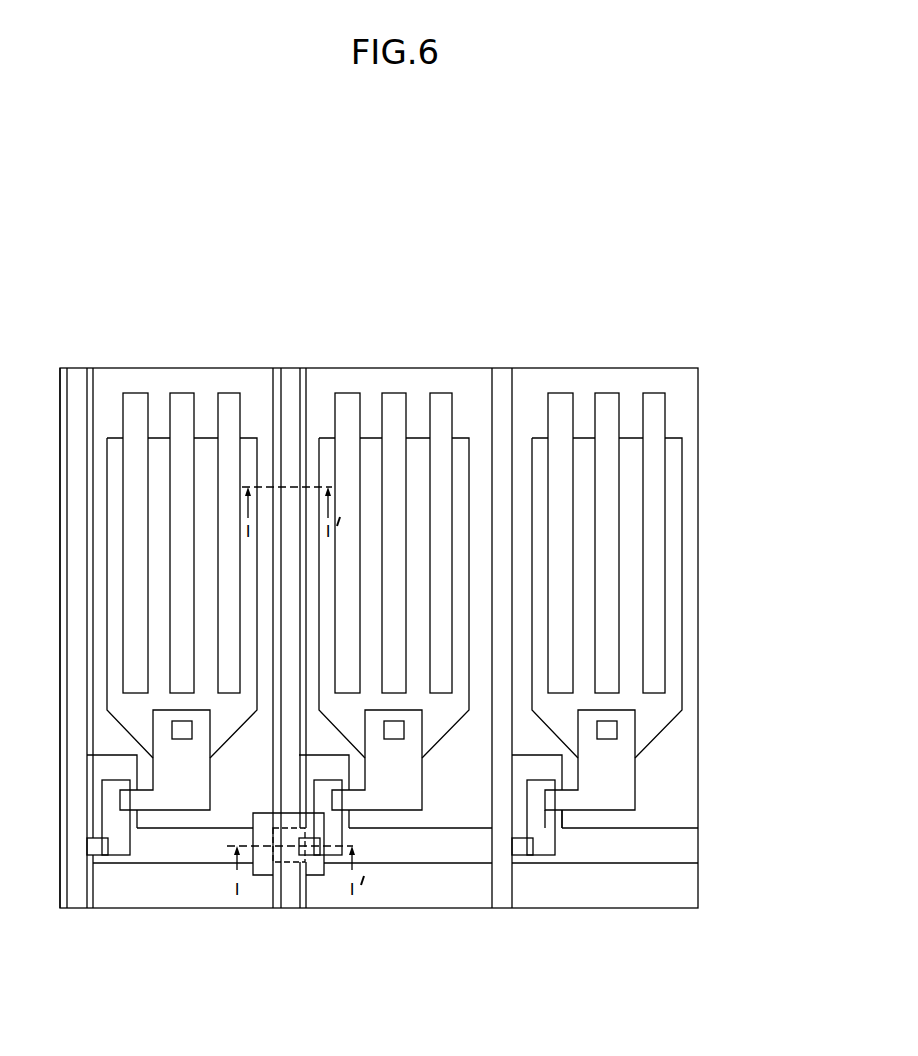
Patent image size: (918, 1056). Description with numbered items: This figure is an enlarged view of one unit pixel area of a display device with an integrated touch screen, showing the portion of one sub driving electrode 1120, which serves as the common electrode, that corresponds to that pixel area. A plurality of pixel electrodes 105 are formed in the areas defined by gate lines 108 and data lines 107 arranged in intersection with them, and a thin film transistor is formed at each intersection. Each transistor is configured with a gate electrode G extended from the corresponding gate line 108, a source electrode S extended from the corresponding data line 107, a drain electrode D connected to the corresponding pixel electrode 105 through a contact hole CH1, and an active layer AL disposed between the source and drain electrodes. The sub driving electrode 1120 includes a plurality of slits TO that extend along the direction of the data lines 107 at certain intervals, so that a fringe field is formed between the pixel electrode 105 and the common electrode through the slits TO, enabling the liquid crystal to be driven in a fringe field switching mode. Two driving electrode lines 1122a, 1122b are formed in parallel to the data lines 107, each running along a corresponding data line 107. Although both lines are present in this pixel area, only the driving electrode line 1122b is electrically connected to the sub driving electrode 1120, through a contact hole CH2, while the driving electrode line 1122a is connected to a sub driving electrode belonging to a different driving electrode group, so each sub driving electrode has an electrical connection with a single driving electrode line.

The sub driving electrode 1120 is at (688, 401).
The data line 107 is at (78, 367).
The driving electrode line 1122a is at (96, 384).
The driving electrode line 1122b is at (310, 384).
The pixel electrode 105 is at (672, 683).
The slit TO is at (566, 403).
The drain electrode D is at (562, 800).
The contact hole CH1 is at (624, 728).
The gate electrode G is at (525, 763).
The gate line 108 is at (682, 852).
The source electrode S is at (522, 847).
The active layer AL is at (547, 823).
The contact hole CH2 is at (288, 877).